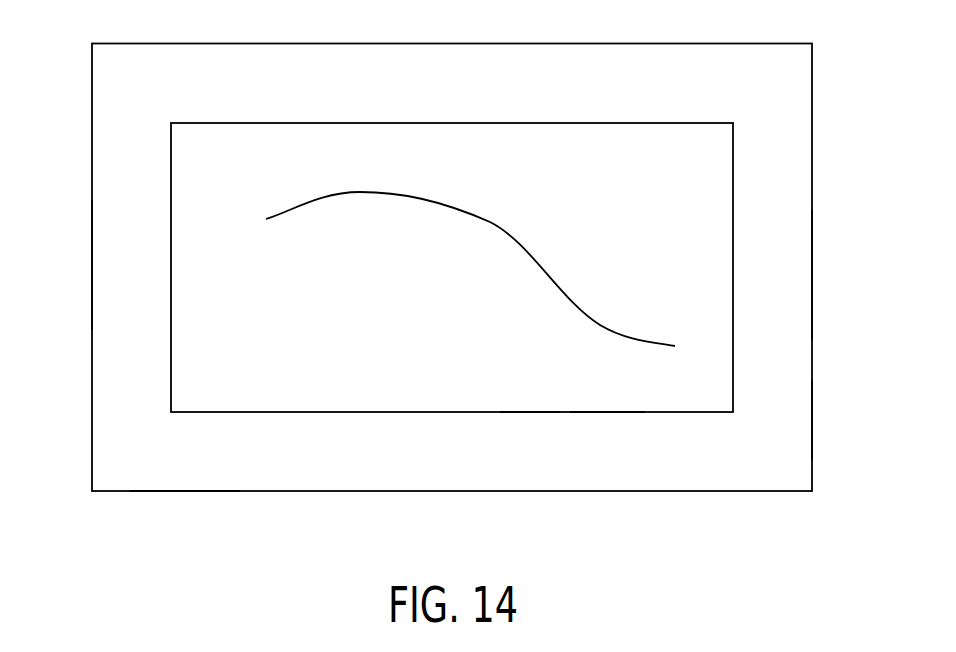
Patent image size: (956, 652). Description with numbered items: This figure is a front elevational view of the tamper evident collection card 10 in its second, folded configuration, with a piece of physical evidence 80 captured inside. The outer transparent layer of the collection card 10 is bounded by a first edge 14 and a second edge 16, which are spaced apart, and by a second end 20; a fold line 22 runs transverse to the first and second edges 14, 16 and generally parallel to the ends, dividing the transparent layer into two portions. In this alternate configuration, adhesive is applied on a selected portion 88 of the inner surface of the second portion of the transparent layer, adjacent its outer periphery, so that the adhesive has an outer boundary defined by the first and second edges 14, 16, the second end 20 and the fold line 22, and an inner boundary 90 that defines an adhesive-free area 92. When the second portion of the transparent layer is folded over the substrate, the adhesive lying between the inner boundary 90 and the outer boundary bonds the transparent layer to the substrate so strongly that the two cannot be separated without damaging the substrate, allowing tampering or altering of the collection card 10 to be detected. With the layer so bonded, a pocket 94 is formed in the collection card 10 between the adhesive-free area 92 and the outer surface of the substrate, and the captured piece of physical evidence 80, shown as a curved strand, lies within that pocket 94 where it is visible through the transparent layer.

The tamper evident collection card 10 is at (137, 513).
The first edge 14 is at (453, 43).
The second edge 16 is at (183, 491).
The second end 20 is at (92, 268).
The fold line 22 is at (812, 269).
The curved line / path 80 is at (490, 222).
The selected portion 88 is at (790, 418).
The inner boundary 90 is at (578, 412).
The adhesive-free area 92 is at (535, 385).
The pocket 94 is at (350, 305).